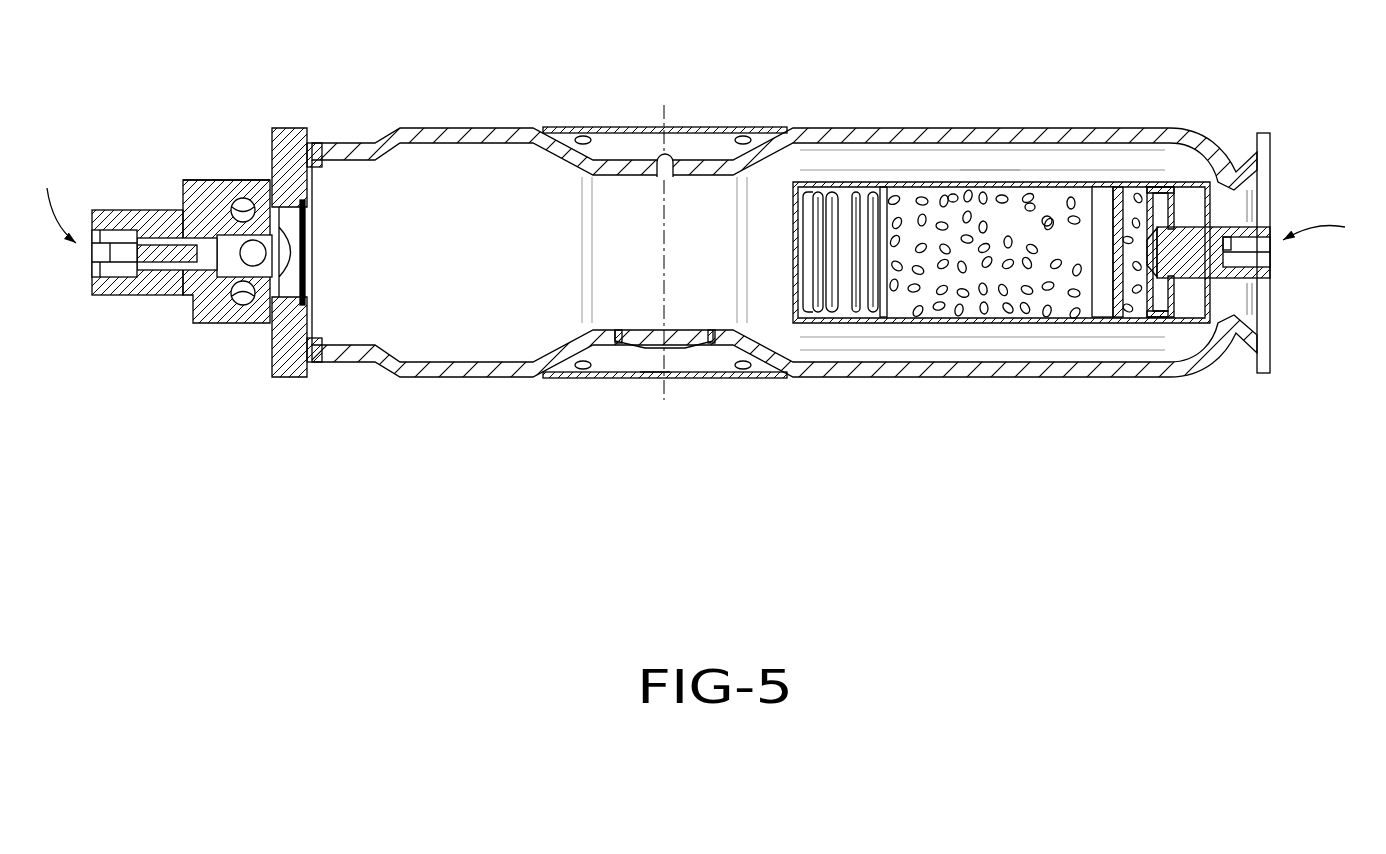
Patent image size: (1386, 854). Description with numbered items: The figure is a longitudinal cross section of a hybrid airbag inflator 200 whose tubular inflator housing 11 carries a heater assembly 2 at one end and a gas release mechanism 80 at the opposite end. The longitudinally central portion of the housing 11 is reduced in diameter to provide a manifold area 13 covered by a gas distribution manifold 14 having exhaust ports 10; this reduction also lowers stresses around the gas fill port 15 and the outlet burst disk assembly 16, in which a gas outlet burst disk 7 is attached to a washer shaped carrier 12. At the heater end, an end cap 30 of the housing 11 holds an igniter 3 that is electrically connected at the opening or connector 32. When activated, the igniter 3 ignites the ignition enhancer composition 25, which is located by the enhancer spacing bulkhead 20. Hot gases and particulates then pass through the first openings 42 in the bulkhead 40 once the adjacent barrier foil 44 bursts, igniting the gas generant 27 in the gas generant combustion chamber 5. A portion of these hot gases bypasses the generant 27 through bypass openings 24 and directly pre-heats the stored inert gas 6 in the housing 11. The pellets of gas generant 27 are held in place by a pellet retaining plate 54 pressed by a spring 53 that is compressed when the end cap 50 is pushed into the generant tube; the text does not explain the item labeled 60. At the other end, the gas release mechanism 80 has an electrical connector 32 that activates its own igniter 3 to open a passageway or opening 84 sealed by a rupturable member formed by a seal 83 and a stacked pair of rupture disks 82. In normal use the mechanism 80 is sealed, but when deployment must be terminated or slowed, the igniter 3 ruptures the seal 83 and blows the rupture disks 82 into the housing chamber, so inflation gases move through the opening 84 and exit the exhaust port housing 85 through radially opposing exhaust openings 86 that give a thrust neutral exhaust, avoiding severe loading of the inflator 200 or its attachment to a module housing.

The hybrid airbag inflator 200 is at (791, 499).
The gas release mechanism 80 is at (203, 119).
The seal 83 is at (282, 243).
The rupture disks 82 is at (310, 260).
The exhaust openings 86 is at (250, 187).
The exhaust port end or housing 85 is at (222, 178).
The passageway or opening 84 is at (258, 282).
The igniter 3 is at (168, 262).
The electrical connector 32 is at (98, 262).
The tubular inflator housing 11 is at (942, 378).
The manifold area 13 is at (623, 158).
The washer shaped carrier 12 is at (621, 348).
The gas distribution manifold 14 is at (654, 379).
The gas fill port 15 is at (668, 153).
The exhaust ports 10 is at (745, 136).
The outlet burst disk assembly 16 is at (739, 370).
The gas outlet burst disk 7 is at (677, 349).
The end cap 50 is at (808, 186).
The spring 53 is at (870, 289).
The pellet retaining plate 54 is at (883, 318).
The secondary stage heater 2 is at (1005, 300).
The gas generant 27 is at (1030, 293).
The bypass openings 24 is at (1048, 216).
The gas generant combustion chamber 5 is at (1031, 204).
The pellet charge 60 is at (953, 194).
The stored inert gas 6 is at (993, 172).
The barrier foil 44 is at (1113, 308).
The first openings 42 is at (1132, 293).
The bulkhead 40 is at (1128, 190).
The enhancer spacing bulkhead 20 is at (1150, 192).
The ignition enhancer composition 25 is at (1138, 305).
The end cap 30 is at (1262, 352).